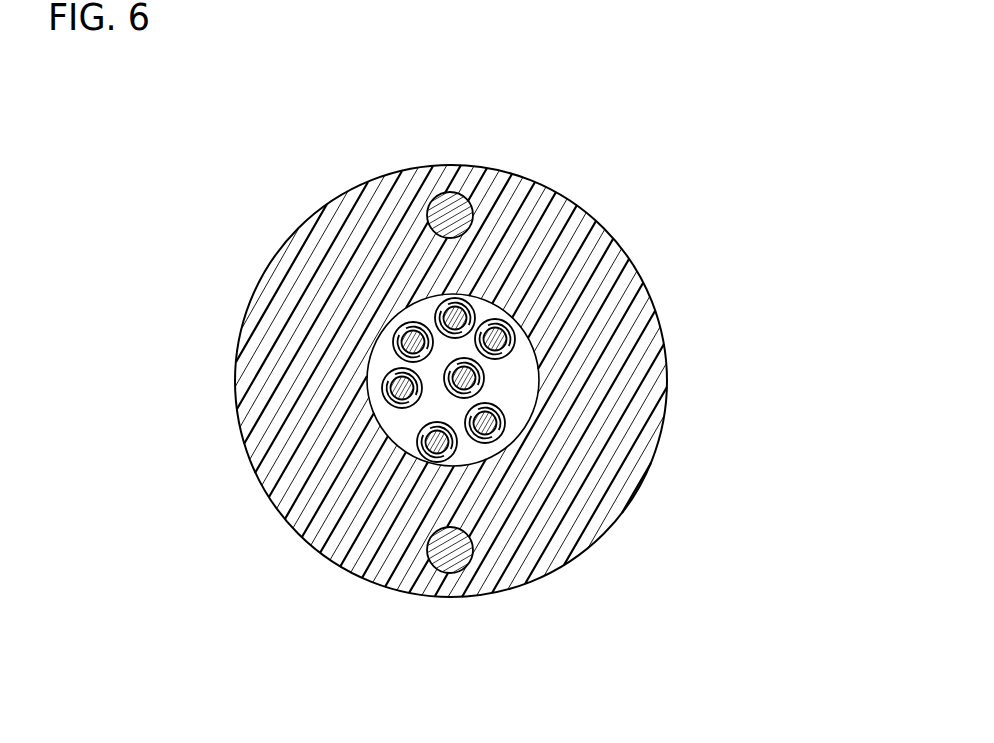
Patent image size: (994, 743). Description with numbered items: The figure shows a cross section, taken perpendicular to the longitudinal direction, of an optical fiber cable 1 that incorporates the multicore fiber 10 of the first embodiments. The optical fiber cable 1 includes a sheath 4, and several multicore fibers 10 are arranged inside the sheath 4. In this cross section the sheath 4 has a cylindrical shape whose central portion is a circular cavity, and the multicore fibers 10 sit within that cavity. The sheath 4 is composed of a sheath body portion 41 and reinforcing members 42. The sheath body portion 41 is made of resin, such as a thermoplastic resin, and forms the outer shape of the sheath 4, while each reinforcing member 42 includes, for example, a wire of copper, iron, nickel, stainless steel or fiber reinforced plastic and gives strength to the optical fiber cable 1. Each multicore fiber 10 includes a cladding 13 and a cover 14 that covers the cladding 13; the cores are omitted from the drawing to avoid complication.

The optical fiber cable 1 is at (686, 123).
The sheath 4 is at (625, 252).
The sheath body portion 41 is at (632, 308).
The reinforcing member 42 is at (467, 197).
The multicore fiber 10 is at (455, 313).
The cladding 13 is at (391, 388).
The cover 14 is at (387, 378).